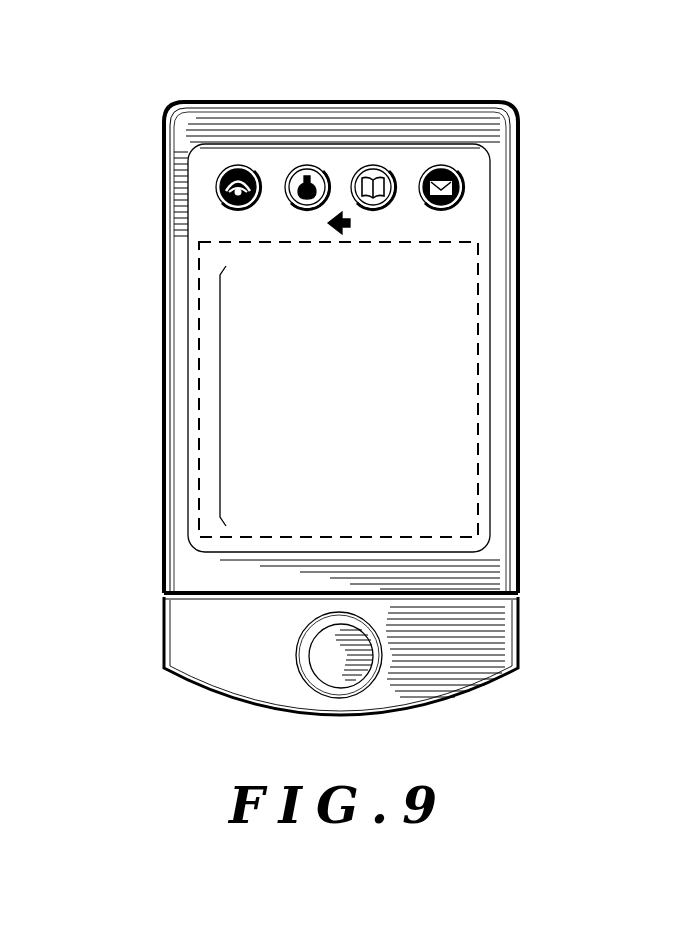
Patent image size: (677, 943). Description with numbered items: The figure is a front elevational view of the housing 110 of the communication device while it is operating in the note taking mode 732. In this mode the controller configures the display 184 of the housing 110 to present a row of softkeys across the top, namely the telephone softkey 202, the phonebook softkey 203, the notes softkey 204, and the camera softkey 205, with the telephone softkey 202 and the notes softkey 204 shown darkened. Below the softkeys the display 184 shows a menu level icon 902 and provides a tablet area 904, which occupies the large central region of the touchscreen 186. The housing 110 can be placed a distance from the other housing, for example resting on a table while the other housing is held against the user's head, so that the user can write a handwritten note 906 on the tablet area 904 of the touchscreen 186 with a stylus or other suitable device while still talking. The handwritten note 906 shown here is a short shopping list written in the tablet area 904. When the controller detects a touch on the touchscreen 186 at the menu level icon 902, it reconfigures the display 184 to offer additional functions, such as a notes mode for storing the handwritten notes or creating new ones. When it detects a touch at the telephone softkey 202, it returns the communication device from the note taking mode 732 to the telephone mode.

The housing 110 is at (520, 316).
The note taking mode 732 is at (515, 54).
The telephone softkey 202 is at (234, 171).
The phonebook softkey 203 is at (376, 168).
The notes softkey 204 is at (450, 206).
The camera softkey 205 is at (296, 206).
The menu level icon 902 is at (344, 212).
The tablet area 904 is at (478, 483).
The handwritten note 906 is at (218, 397).
The display 184 is at (448, 406).
The touchscreen 186 is at (444, 372).